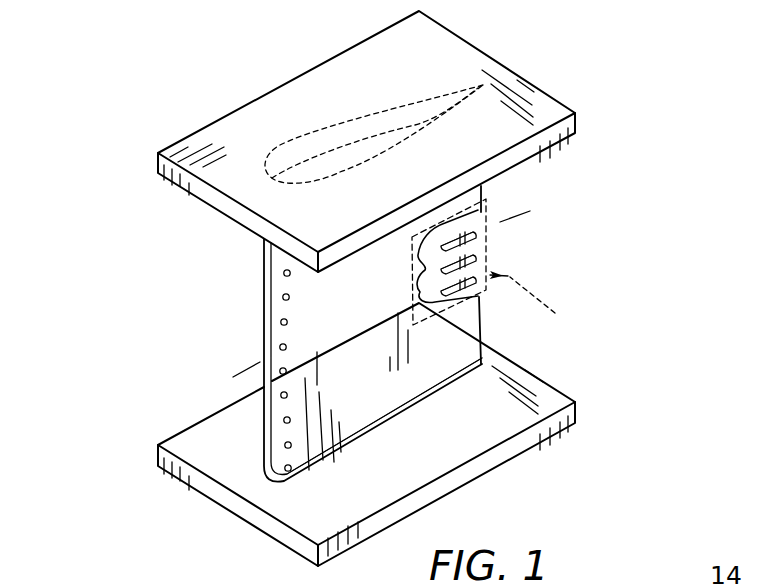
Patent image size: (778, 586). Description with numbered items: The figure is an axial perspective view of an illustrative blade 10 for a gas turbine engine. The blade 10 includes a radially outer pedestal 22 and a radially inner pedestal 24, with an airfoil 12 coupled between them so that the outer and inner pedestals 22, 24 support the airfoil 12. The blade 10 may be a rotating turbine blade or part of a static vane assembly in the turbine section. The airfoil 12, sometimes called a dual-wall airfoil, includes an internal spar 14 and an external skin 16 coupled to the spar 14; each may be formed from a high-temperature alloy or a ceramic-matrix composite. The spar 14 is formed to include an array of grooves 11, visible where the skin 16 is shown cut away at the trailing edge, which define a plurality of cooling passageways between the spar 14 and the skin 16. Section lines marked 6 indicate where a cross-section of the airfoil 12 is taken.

The blade 10 is at (598, 70).
The radially outer pedestal 22 is at (255, 128).
The radially inner pedestal 24 is at (175, 483).
The airfoil 12 is at (238, 354).
The spar 14 is at (478, 289).
The array of grooves 11 is at (470, 258).
The skin 16 is at (405, 400).
The section line 6 is at (249, 410).